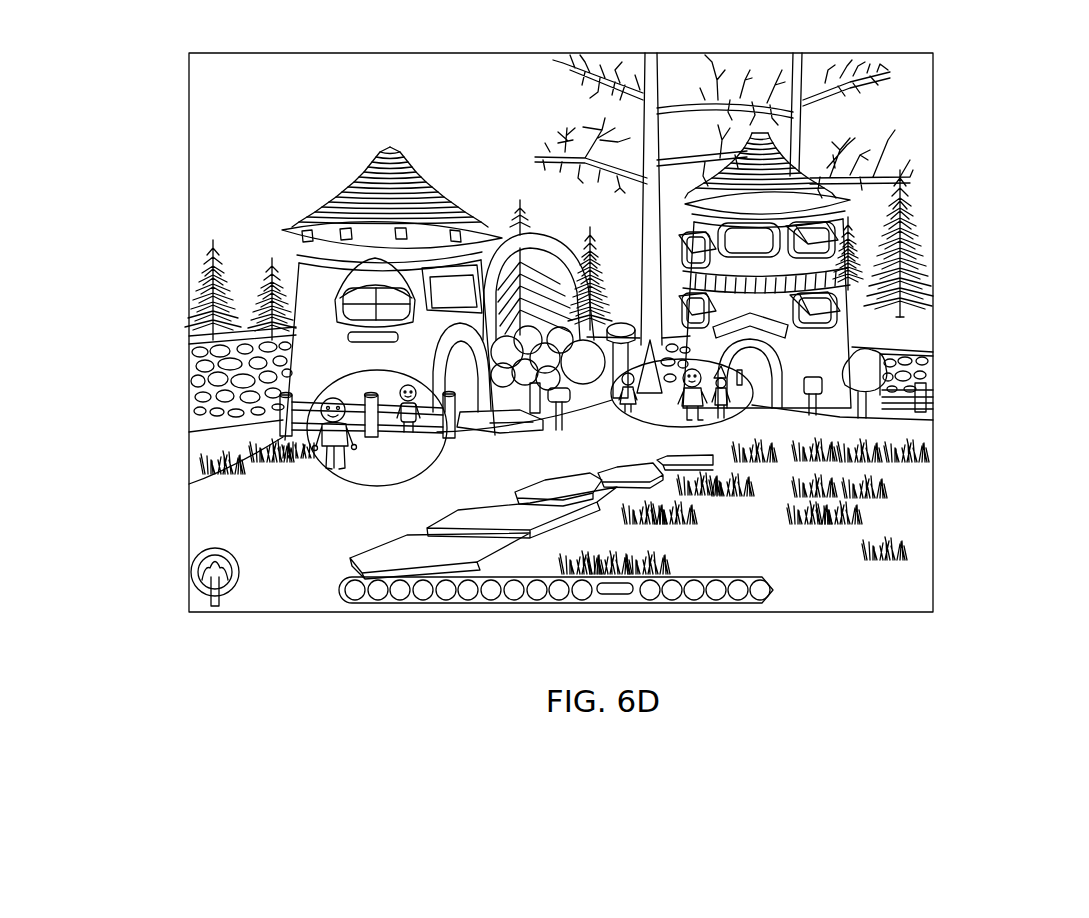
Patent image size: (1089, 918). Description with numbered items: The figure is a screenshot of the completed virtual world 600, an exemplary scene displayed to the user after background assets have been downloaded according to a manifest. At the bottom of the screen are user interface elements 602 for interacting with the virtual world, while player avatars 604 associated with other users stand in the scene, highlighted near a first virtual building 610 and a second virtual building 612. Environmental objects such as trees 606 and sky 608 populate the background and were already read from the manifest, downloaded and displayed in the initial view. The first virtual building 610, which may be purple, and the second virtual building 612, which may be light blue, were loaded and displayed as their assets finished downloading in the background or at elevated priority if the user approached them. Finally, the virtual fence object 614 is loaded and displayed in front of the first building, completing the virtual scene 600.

The virtual world 600 is at (963, 93).
The user interface elements 602 is at (437, 595).
The player avatars 604 is at (330, 477).
The trees 606 is at (648, 73).
The sky 608 is at (272, 98).
The first virtual building 610 is at (852, 327).
The second virtual building 612 is at (283, 227).
The virtual fence object 614 is at (283, 425).